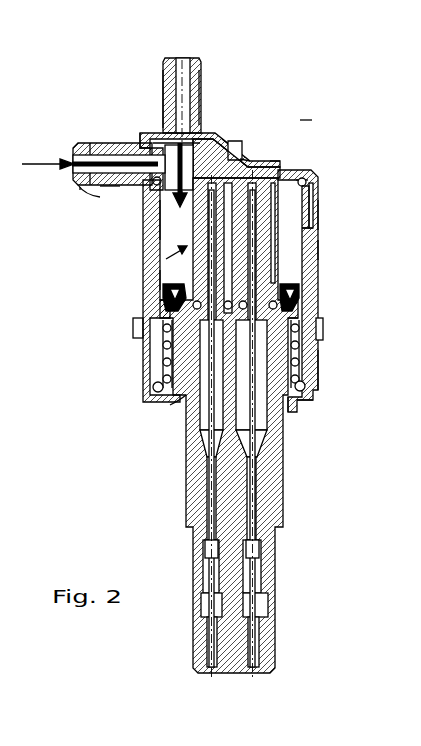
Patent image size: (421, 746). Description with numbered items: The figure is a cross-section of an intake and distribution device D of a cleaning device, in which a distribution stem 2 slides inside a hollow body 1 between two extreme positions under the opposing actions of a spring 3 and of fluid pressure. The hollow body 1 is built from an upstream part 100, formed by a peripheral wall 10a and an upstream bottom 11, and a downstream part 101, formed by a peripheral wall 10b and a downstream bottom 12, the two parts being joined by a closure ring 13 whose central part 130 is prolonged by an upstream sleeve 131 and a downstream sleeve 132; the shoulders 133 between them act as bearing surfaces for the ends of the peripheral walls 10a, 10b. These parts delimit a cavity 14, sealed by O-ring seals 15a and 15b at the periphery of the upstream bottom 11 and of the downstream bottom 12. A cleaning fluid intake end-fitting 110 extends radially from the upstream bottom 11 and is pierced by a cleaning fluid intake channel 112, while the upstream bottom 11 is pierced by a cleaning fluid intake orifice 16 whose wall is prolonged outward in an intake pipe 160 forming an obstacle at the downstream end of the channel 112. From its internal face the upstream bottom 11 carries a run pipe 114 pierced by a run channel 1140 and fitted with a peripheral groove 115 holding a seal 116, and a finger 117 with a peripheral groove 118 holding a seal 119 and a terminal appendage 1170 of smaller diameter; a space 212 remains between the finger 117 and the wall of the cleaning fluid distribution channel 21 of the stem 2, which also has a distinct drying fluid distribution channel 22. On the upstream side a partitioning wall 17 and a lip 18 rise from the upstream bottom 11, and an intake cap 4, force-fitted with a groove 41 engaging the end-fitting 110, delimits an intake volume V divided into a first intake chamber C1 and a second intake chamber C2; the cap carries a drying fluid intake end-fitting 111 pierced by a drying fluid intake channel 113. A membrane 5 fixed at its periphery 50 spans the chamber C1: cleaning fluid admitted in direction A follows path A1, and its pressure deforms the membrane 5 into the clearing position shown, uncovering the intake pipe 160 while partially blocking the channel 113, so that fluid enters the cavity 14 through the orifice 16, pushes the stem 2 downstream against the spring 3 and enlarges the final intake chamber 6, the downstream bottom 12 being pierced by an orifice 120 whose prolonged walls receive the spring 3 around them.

The hollow body 1 is at (316, 250).
The distribution stem 2 is at (192, 508).
The spring 3 is at (160, 367).
The intake cap 4 is at (221, 131).
The membrane 5 is at (152, 128).
The final intake chamber 6 is at (185, 243).
The peripheral wall 10a is at (318, 215).
The peripheral wall 10b is at (313, 368).
The upstream bottom 11 is at (290, 173).
The downstream bottom 12 is at (296, 402).
The closure ring 13 is at (303, 318).
The cavity 14 is at (190, 250).
The O-ring seal 15a is at (303, 180).
The O-ring seal 15b is at (302, 388).
The cleaning fluid intake orifice 16 is at (148, 212).
The partitioning wall 17 is at (237, 163).
The lip 18 is at (278, 160).
The cleaning fluid distribution channel 21 is at (197, 440).
The drying fluid distribution channel 22 is at (262, 440).
The groove 41 is at (147, 133).
The periphery 50 is at (80, 150).
The upstream part 100 is at (310, 174).
The downstream part 101 is at (310, 393).
The cleaning fluid intake end-fitting 110 is at (96, 142).
The drying fluid intake end-fitting 111 is at (182, 100).
The cleaning fluid intake channel 112 is at (110, 187).
The drying fluid intake channel 113 is at (198, 80).
The run pipe 114 is at (273, 247).
The peripheral groove 115 is at (290, 278).
The seal 116 is at (323, 330).
The finger 117 is at (200, 222).
The peripheral groove 118 is at (172, 300).
The seal 119 is at (167, 318).
The orifice 120 is at (278, 443).
The central part 130 is at (306, 293).
The upstream sleeve 131 is at (310, 192).
The downstream sleeve 132 is at (297, 355).
The shoulders 133 is at (312, 228).
The intake pipe 160 is at (153, 195).
The space 212 is at (163, 293).
The run channel 1140 is at (252, 187).
The terminal appendage 1170 is at (180, 400).
The arrow A is at (111, 175).
The continuous line A1 is at (84, 188).
The first intake chamber C1 is at (198, 140).
The second intake chamber C2 is at (244, 158).
The intake and distribution device D is at (319, 113).
The intake volume V is at (225, 143).